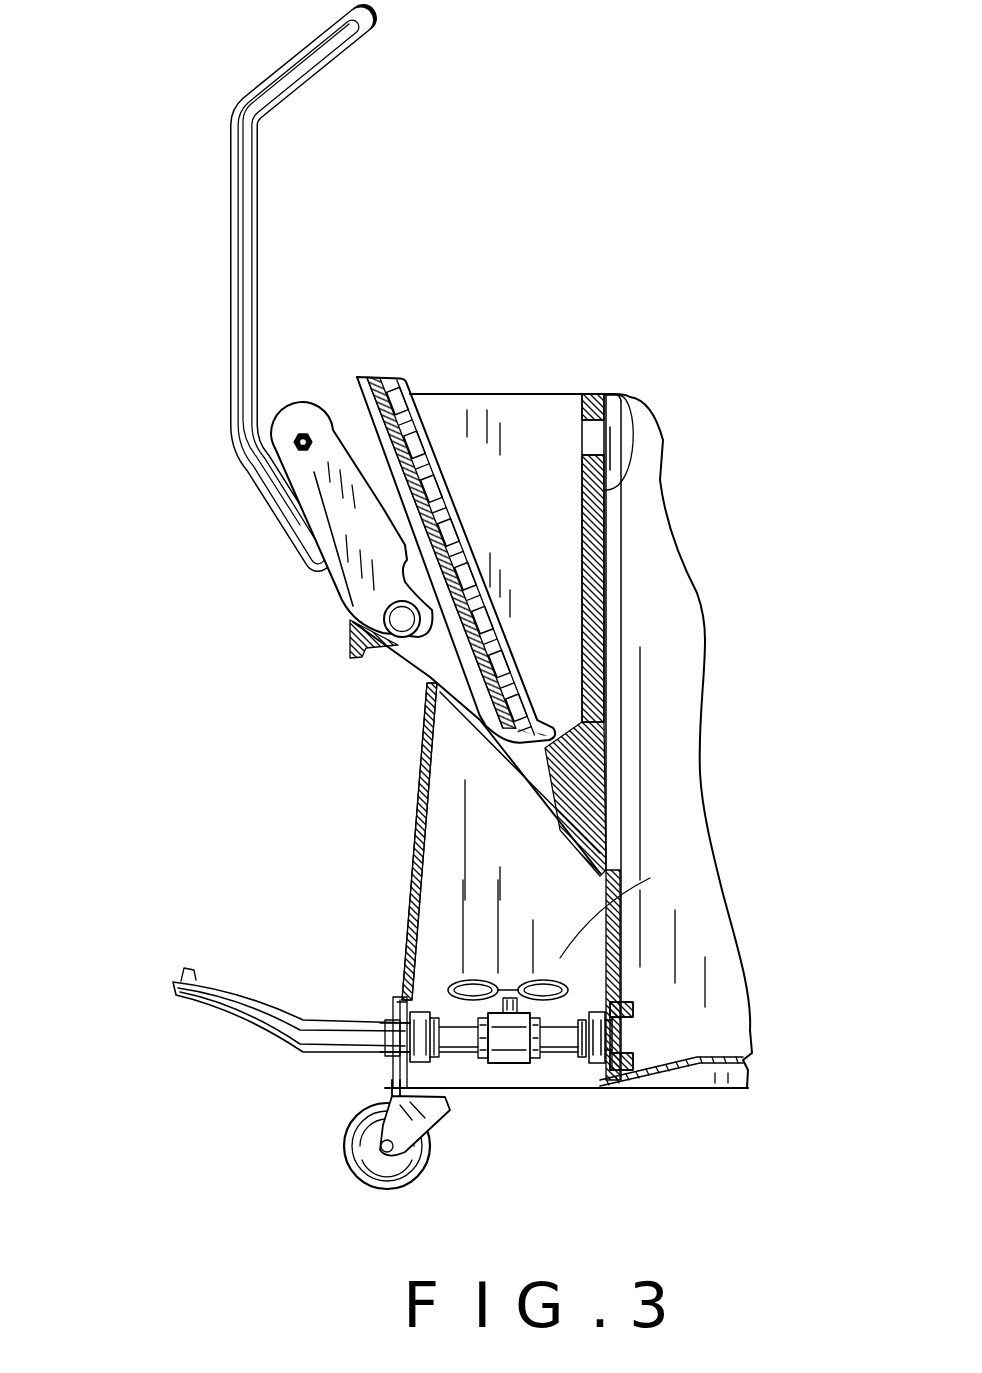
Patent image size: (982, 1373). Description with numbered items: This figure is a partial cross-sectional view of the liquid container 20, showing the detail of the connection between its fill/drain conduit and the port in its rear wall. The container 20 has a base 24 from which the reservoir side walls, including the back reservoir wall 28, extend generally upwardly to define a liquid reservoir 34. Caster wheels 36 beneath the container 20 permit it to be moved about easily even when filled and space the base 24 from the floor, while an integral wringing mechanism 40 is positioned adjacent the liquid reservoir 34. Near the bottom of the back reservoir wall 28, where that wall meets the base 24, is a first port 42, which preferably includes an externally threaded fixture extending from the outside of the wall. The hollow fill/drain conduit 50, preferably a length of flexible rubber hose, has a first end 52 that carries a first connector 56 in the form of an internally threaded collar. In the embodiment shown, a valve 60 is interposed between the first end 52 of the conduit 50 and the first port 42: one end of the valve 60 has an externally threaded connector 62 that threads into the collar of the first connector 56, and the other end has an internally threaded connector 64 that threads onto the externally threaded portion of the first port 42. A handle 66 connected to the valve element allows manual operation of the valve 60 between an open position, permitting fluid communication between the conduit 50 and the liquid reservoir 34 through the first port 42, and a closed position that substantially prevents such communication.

The liquid container 20 is at (690, 396).
The base 24 is at (700, 1073).
The back reservoir wall 28 is at (632, 470).
The liquid reservoir 34 is at (682, 650).
The caster wheels 36 is at (403, 1128).
The wringing mechanism 40 is at (444, 421).
The first port 42 is at (633, 1040).
The fill/drain conduit 50 is at (205, 987).
The first end 52 is at (380, 1037).
The first connector 56 is at (420, 1042).
The valve 60 is at (515, 1037).
The externally threaded connector 62 is at (415, 903).
The internally threaded connector 64 is at (618, 963).
The handle 66 is at (547, 985).